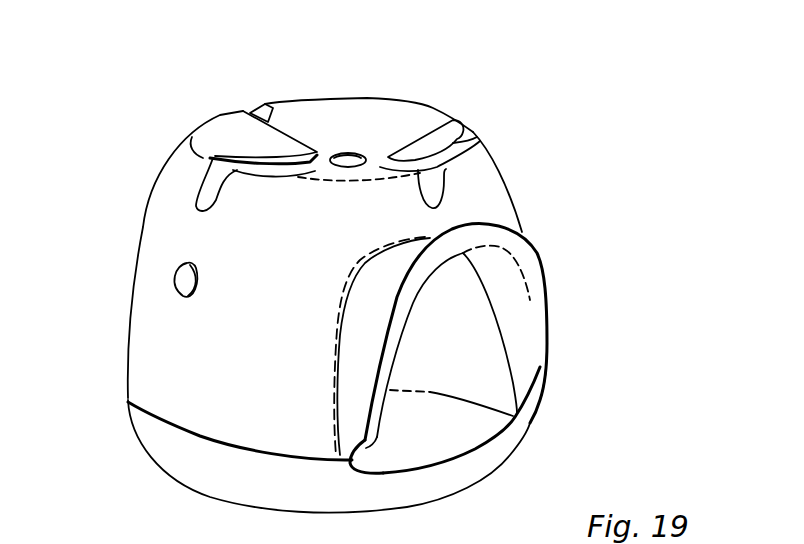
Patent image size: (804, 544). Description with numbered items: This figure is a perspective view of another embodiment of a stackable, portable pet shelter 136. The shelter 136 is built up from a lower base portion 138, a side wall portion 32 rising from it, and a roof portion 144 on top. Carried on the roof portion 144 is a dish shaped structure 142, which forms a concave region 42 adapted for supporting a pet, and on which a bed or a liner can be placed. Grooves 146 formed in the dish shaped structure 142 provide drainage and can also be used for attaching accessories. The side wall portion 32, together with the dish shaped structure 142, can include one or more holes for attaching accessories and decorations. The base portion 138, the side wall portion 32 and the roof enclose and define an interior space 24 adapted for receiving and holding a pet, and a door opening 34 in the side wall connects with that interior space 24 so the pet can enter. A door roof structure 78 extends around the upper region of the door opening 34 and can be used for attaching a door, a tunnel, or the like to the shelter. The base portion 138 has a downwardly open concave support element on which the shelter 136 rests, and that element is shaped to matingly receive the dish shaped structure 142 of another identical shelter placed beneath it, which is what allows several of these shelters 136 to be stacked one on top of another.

The interior space 24 is at (450, 342).
The side wall portion 32 is at (140, 328).
The door opening 34 is at (520, 362).
The concave region 42 is at (320, 127).
The door roof structure 78 is at (363, 330).
The portable pet shelter 136 is at (560, 168).
The lower base portion 138 is at (527, 437).
The dish shaped structure 142 is at (436, 108).
The roof portion 144 is at (363, 115).
The grooves 146 is at (270, 103).